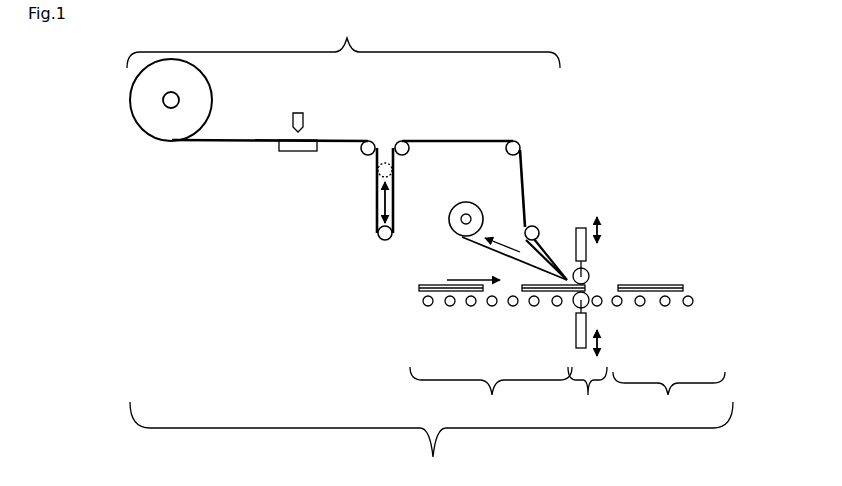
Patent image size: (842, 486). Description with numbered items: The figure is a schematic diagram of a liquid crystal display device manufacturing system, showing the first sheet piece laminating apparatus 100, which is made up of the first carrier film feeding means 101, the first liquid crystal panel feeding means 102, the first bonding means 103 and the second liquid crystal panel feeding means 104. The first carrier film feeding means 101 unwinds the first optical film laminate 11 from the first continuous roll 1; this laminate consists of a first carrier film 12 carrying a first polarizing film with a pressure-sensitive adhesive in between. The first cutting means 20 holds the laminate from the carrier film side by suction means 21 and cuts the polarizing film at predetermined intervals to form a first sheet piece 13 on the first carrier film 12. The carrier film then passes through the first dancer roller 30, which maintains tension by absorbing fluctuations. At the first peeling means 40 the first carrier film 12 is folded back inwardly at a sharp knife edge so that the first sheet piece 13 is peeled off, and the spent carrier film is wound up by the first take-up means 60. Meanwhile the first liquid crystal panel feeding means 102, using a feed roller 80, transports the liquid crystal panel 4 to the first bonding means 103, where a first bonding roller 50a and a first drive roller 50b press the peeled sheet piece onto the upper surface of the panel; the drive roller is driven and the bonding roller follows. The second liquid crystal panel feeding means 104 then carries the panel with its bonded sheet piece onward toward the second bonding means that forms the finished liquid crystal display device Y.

The first continuous roll 1 is at (143, 127).
The first optical film laminate 11 is at (223, 140).
The first cutting means 20 is at (298, 113).
The suction means 21 is at (287, 151).
The first dancer roller 30 is at (376, 206).
The first take-up means 60 is at (457, 207).
The first carrier film 12 is at (473, 247).
The first peeling means 40 is at (550, 257).
The liquid crystal panel 4 is at (420, 285).
The first sheet piece 13 is at (661, 285).
The liquid crystal display device Y is at (683, 276).
The first bonding roller 50a is at (590, 274).
The first drive roller 50b is at (573, 307).
The feed roller 80 is at (430, 312).
The first sheet piece laminating apparatus 100 is at (431, 444).
The first carrier film feeding means 101 is at (343, 44).
The first liquid crystal panel feeding means 102 is at (491, 395).
The first bonding means 103 is at (589, 395).
The second liquid crystal panel feeding means 104 is at (669, 397).